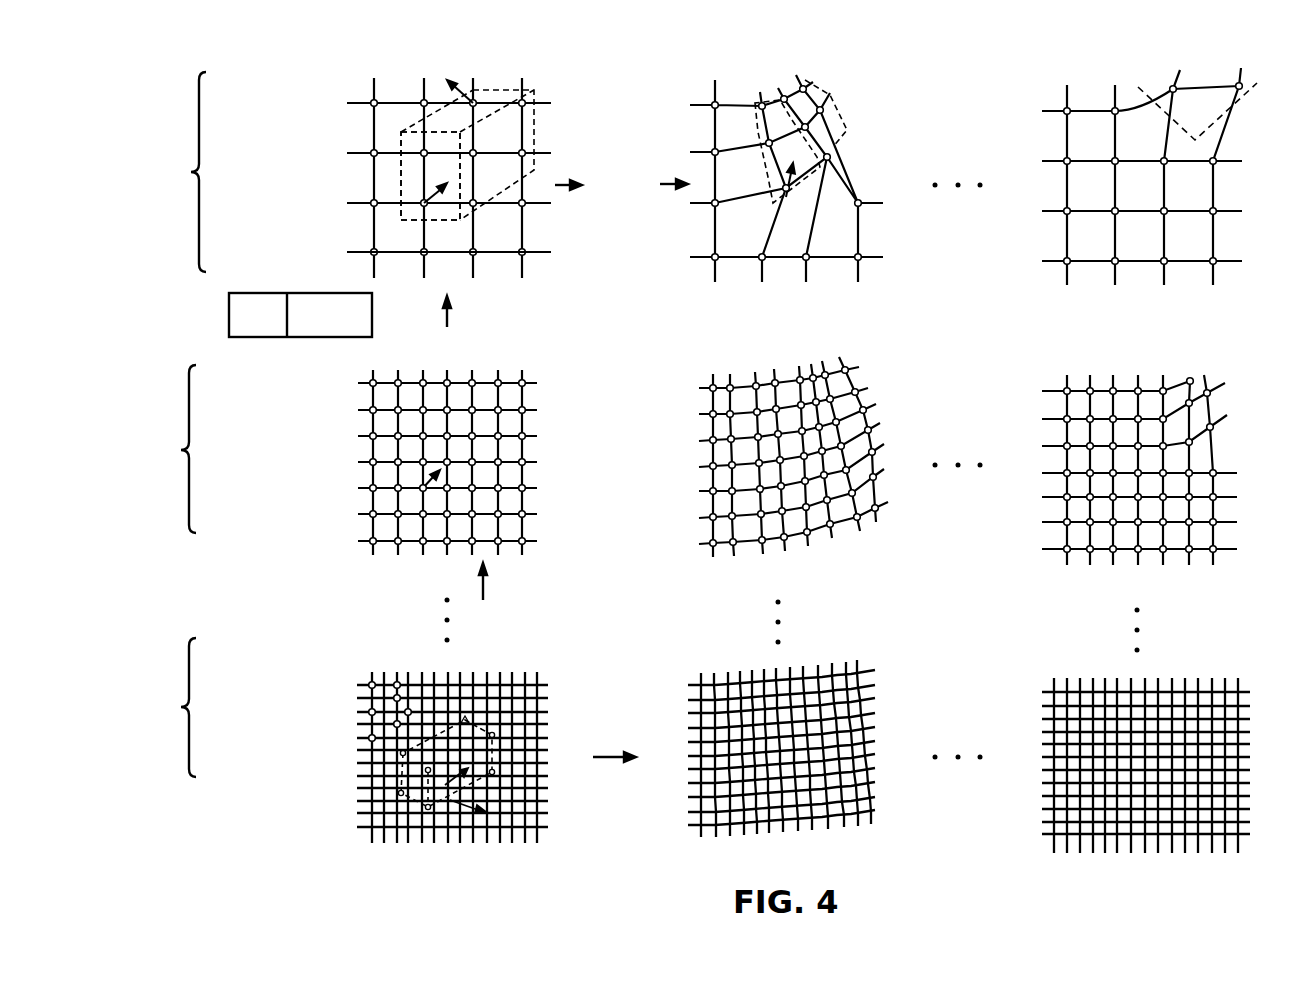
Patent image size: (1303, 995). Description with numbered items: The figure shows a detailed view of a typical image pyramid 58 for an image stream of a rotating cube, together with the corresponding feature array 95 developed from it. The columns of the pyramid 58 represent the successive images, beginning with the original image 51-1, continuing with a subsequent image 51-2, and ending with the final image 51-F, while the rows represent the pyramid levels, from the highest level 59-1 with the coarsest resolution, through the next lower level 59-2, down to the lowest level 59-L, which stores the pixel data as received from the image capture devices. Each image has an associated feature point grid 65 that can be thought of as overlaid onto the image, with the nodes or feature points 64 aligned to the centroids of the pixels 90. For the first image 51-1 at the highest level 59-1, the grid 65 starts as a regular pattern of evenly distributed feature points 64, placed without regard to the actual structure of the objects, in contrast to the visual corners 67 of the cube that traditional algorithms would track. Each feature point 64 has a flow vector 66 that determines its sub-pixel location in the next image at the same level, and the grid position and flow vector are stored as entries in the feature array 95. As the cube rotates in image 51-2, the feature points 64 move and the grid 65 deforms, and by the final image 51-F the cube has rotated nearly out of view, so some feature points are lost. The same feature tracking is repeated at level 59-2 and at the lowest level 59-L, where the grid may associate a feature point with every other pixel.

The pyramid 58 is at (166, 106).
The feature array 95 is at (302, 84).
The highest level 59-1 is at (699, 431).
The fourth level 59-2 is at (688, 478).
The lowest level 59-L is at (695, 757).
The feature point 64 is at (374, 203).
The feature point grid 65 is at (425, 266).
The flow vector 66 is at (453, 82).
The visual corner 67 is at (533, 93).
The pixel 90 is at (535, 118).
The original image 51-1 is at (452, 773).
The subsequent image 51-2 is at (781, 767).
The final image 51-F is at (1146, 777).